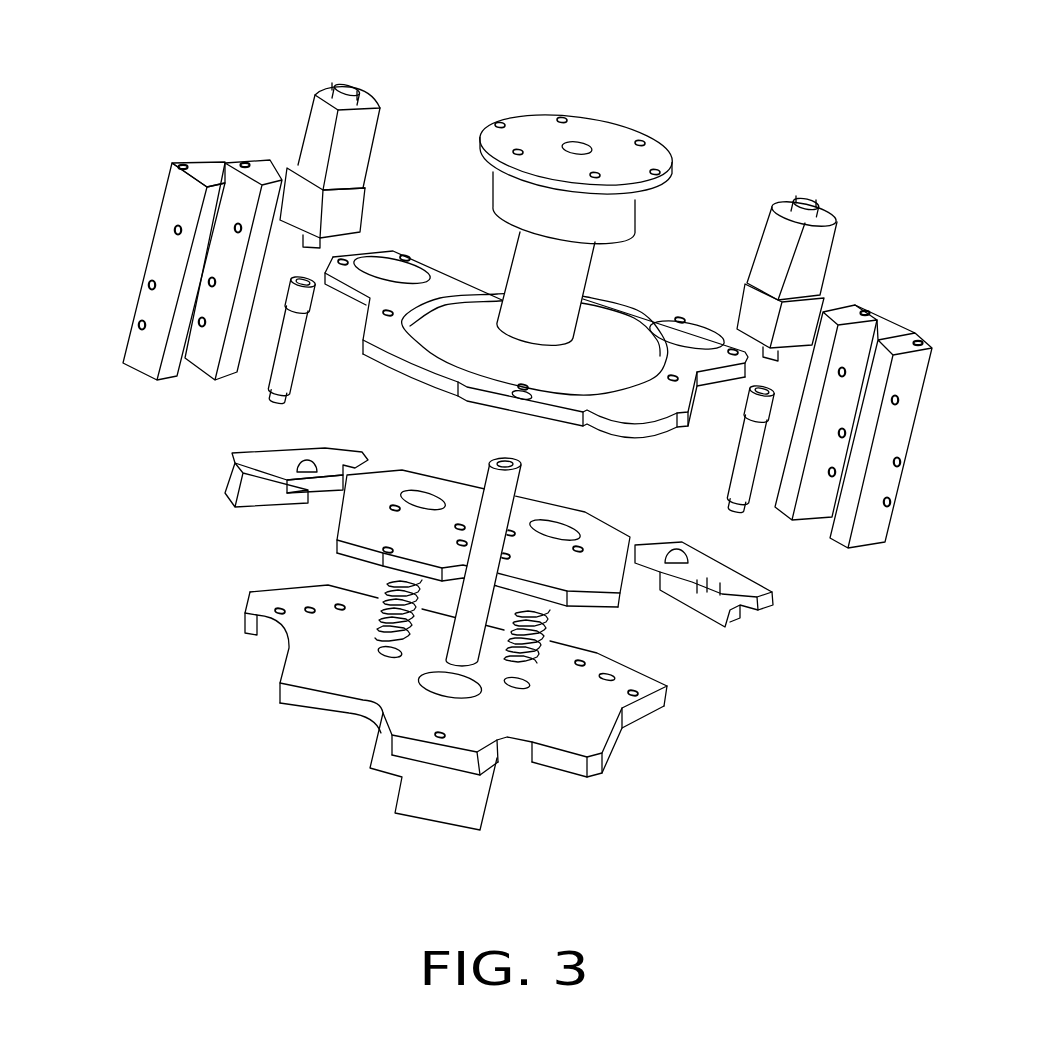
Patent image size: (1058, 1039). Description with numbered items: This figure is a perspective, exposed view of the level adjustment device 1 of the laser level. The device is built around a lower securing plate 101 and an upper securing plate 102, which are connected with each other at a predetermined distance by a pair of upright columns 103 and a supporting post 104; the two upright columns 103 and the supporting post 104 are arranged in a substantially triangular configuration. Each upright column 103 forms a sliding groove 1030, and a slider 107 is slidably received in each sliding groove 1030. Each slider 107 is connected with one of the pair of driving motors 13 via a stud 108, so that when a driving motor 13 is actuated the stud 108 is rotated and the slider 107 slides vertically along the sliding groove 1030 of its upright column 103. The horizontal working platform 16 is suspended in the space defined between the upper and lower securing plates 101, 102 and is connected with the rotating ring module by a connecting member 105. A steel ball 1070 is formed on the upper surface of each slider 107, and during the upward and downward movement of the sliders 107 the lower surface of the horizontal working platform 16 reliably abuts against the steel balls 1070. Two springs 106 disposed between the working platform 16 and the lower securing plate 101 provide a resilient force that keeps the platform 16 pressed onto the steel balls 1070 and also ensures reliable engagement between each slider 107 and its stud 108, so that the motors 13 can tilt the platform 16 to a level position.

The level adjustment device 1 is at (515, 25).
The driving motor 13 is at (320, 128).
The horizontal working platform 16 is at (370, 532).
The lower securing plate 101 is at (588, 728).
The upper securing plate 102 is at (627, 320).
The upright column 103 is at (168, 253).
The sliding groove 1030 is at (218, 172).
The supporting post 104 is at (460, 645).
The connecting member 105 is at (588, 133).
The spring 106 is at (540, 645).
The slider 107 is at (265, 480).
The steel ball 1070 is at (287, 458).
The stud 108 is at (288, 355).